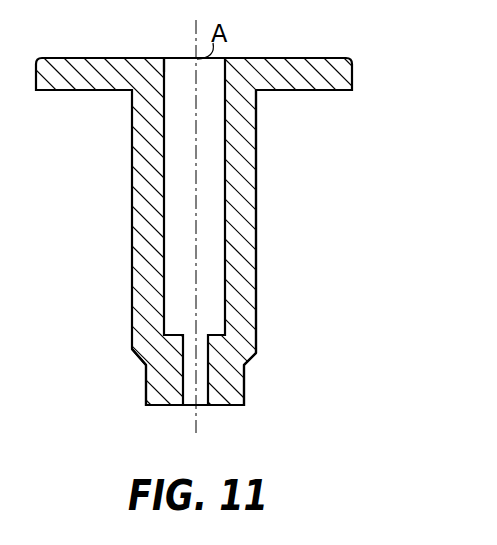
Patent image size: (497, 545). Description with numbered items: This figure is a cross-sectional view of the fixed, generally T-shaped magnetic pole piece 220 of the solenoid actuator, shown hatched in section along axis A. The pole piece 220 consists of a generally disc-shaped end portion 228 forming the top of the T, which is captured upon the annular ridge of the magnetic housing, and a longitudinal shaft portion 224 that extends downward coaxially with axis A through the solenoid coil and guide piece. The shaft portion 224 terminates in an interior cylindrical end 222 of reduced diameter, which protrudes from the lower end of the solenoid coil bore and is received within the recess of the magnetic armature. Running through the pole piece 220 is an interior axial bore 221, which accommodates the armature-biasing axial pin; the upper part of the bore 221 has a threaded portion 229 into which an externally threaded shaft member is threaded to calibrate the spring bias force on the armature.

The magnetic pole piece 220 is at (281, 197).
The interior axial bore 221 is at (178, 183).
The interior cylindrical end 222 is at (245, 380).
The longitudinal shaft portion 224 is at (258, 291).
The disc-shaped end portion 228 is at (334, 91).
The threaded portion 229 is at (172, 61).